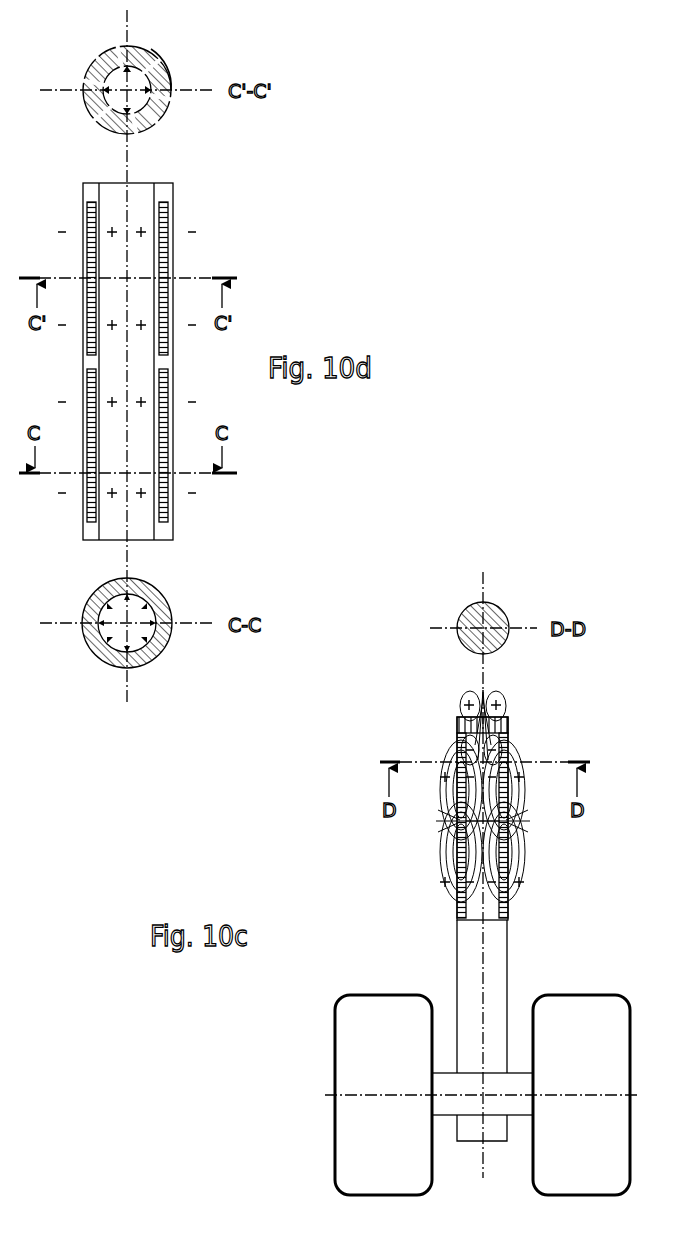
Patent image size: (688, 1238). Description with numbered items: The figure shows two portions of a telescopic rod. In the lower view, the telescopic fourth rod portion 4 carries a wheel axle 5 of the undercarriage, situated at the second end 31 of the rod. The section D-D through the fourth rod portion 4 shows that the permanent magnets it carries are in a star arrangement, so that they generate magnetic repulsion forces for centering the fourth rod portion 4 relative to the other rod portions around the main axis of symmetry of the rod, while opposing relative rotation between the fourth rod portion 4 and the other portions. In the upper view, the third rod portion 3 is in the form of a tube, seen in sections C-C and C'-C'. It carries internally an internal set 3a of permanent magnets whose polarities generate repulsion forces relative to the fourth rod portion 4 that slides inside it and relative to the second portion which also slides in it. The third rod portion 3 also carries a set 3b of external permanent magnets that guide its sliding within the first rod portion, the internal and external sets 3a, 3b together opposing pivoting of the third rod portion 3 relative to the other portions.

In FIG. 10d, the third rod portion 3 is at (85, 112).
In FIG. 10d, the internal set of permanent magnets 3a is at (138, 50).
In FIG. 10d, the set of external permanent magnets 3b is at (166, 72).
In FIG. 10c, the fourth rod portion 4 is at (496, 604).
In FIG. 10c, the wheel axle 5 is at (437, 1085).
In FIG. 10c, the second end 31 is at (493, 1138).